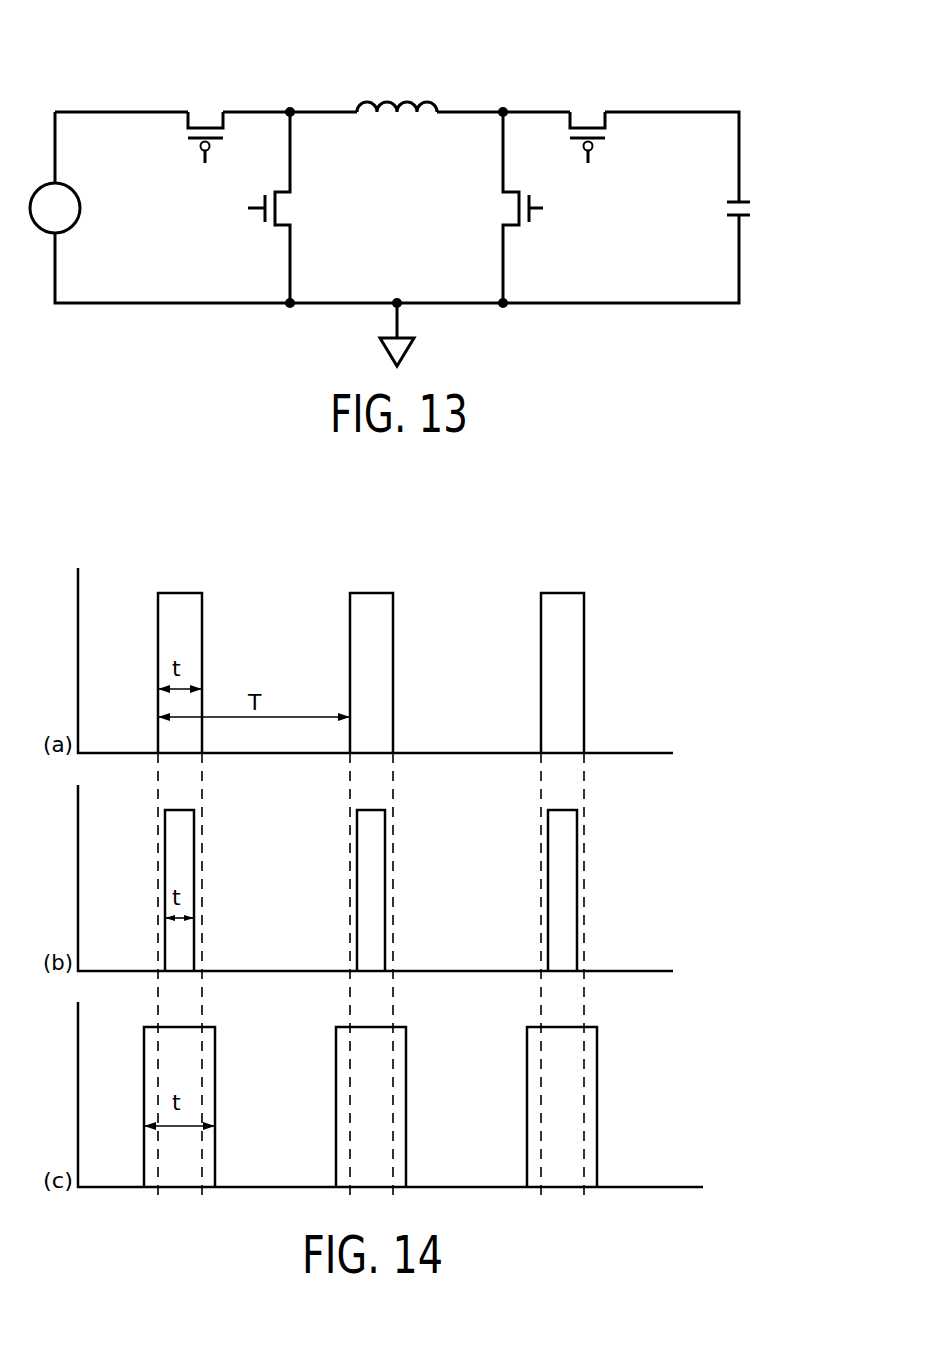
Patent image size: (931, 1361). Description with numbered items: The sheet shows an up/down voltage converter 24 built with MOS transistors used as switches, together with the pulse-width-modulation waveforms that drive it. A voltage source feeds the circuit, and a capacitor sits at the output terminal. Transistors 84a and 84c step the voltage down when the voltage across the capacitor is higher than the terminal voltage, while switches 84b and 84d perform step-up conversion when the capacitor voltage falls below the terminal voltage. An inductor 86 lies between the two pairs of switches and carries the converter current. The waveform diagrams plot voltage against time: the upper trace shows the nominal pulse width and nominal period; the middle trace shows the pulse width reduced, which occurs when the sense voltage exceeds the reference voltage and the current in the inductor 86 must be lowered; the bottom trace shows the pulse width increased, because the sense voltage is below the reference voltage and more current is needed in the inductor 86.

The converter 24 is at (410, 200).
The transistor 84a is at (206, 113).
The switch 84b is at (588, 113).
The transistor 84c is at (292, 207).
The switch 84d is at (500, 208).
The inductor 86 is at (405, 102).